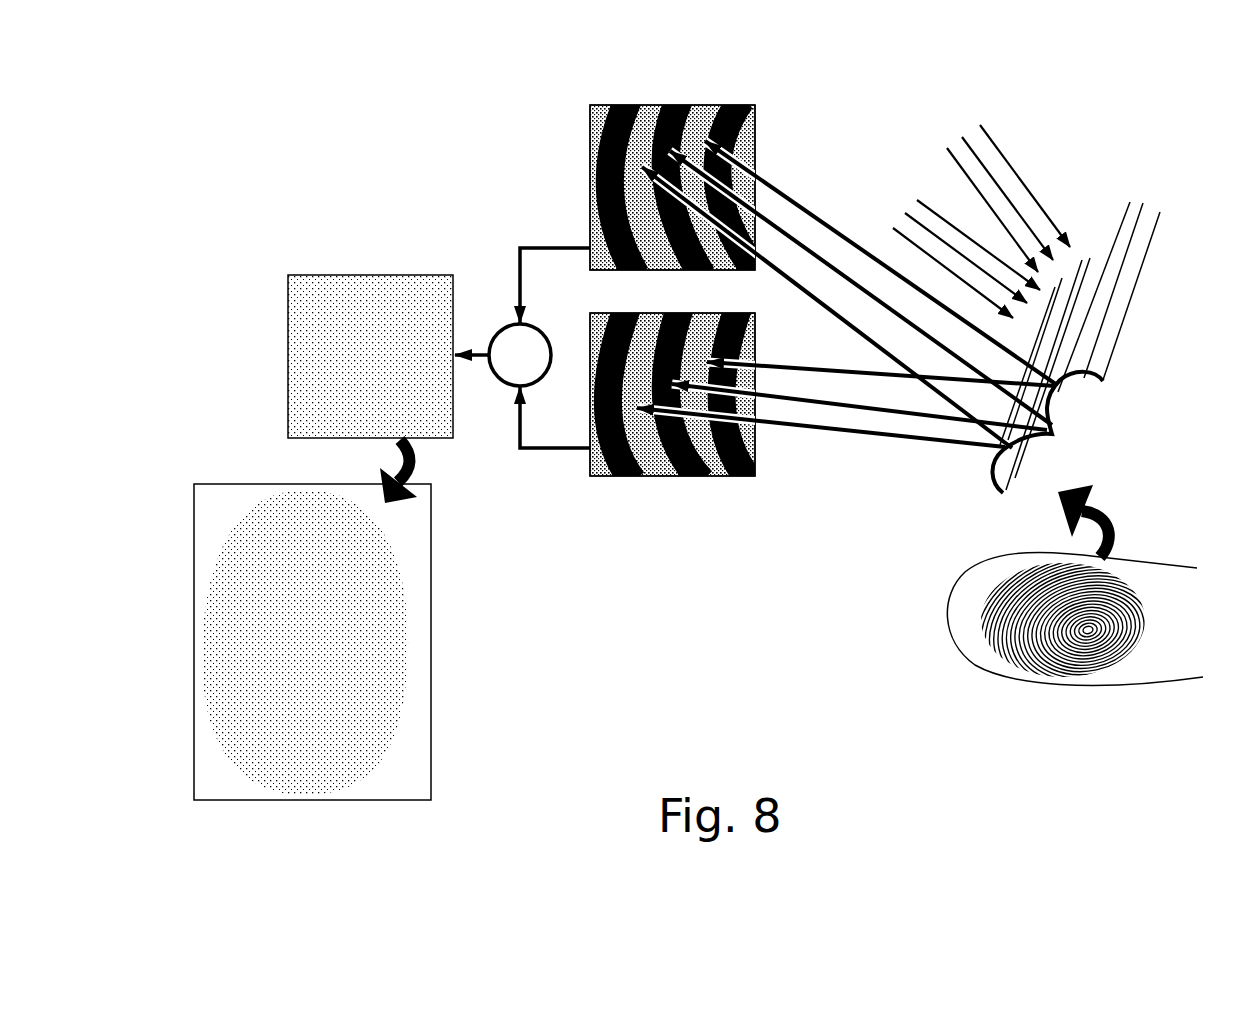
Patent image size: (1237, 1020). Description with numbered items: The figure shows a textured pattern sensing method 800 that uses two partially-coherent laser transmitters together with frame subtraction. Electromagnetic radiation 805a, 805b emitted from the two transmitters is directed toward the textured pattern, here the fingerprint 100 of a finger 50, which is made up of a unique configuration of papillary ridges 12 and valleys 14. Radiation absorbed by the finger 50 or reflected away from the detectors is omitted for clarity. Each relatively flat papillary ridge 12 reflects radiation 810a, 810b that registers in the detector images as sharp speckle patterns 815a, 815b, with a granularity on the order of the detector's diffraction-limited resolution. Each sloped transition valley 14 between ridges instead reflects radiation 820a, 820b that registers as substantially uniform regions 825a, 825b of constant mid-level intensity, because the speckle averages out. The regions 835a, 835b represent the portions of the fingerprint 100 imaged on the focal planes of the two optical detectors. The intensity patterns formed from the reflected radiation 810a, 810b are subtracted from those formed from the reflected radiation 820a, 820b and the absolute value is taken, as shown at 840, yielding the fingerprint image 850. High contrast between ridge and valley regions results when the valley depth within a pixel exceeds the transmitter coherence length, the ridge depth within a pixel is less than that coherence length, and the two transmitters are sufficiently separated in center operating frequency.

The textured pattern sensing method 800 is at (303, 140).
The region 835a is at (585, 183).
The region 835b is at (740, 482).
The sharp speckle pattern 815a is at (652, 125).
The sharp speckle pattern 815b is at (600, 477).
The substantially uniform region 825a is at (677, 105).
The substantially uniform region 825b is at (635, 478).
The reflected radiation 810a is at (783, 263).
The reflected radiation 810b is at (817, 373).
The reflected radiation 820a is at (817, 262).
The reflected radiation 820b is at (875, 413).
The electromagnetic radiation 805a is at (982, 110).
The electromagnetic radiation 805b is at (923, 188).
The papillary ridge 12 is at (1100, 272).
The valley 14 is at (1052, 435).
The subtraction 840 is at (505, 345).
The fingerprint image 850 is at (431, 633).
The finger 50 is at (1020, 680).
The fingerprint 100 is at (1130, 657).